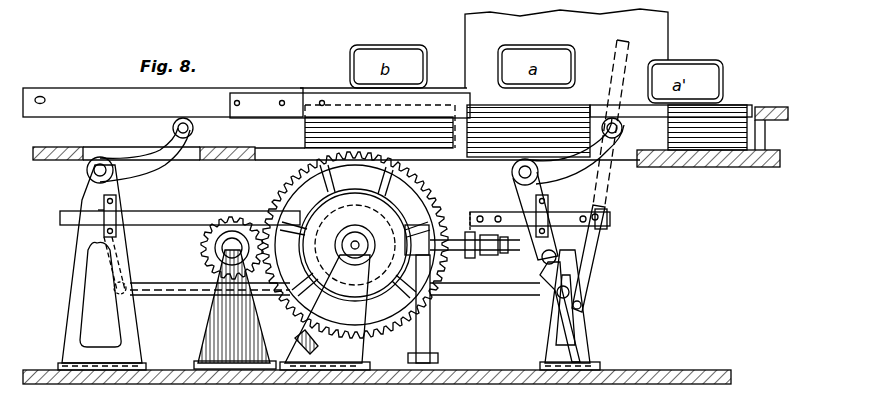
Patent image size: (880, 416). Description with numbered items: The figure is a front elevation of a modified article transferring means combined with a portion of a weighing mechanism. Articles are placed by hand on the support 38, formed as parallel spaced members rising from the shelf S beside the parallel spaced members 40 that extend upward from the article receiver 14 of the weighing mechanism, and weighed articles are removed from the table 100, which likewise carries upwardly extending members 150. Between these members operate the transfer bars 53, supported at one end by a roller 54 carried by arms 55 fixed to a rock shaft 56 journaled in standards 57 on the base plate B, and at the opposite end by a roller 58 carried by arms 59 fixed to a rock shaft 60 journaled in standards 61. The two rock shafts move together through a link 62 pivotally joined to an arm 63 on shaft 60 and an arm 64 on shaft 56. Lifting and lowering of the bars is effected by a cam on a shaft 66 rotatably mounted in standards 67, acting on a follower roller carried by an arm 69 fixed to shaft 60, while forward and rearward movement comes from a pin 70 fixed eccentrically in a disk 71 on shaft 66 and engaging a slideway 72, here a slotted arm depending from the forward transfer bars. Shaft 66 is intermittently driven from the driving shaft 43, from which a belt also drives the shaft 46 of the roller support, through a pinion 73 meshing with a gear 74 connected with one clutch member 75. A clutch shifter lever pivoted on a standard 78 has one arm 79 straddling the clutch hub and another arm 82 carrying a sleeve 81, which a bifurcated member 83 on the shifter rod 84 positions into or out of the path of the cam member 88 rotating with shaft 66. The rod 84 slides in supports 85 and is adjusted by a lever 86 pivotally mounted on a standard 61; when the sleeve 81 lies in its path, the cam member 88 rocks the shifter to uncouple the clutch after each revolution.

The transfer bars 53 is at (212, 103).
The article support 38 is at (326, 125).
The receiver members 40 is at (483, 108).
The table members 150 is at (723, 125).
The support or table 100 is at (735, 165).
The shelf S is at (66, 150).
The base plate B is at (658, 371).
The arms 55 is at (152, 158).
The roller 54 is at (194, 128).
The rock shaft 56 is at (88, 172).
The standards 57 is at (65, 318).
The shifter bar supports 85 is at (118, 208).
The shifter rod 84 is at (178, 212).
The arm 64 is at (128, 260).
The link 62 is at (178, 290).
The shaft 46 is at (235, 309).
The slideway 72 is at (246, 306).
The pinion 73 is at (205, 246).
The shaft 43 is at (224, 250).
The disk 71 is at (262, 232).
The clutch shifter arm 79 is at (420, 162).
The clutch member 75 is at (336, 180).
The shaft 66 is at (352, 240).
The standards 67 is at (356, 358).
The cam member 88 is at (306, 356).
The gear 74 is at (428, 300).
The pin 70 is at (432, 320).
The standard 78 is at (436, 357).
The shifter arm 82 is at (474, 252).
The bifurcated member 83 is at (480, 214).
The article receiver 14 is at (496, 150).
The sleeve 81 is at (485, 296).
The arm 69 is at (560, 310).
The rock shaft 60 is at (516, 180).
The arm 63 is at (556, 262).
The standards 61 is at (574, 347).
The arms 59 is at (608, 170).
The roller 58 is at (620, 133).
The lever 86 is at (592, 258).